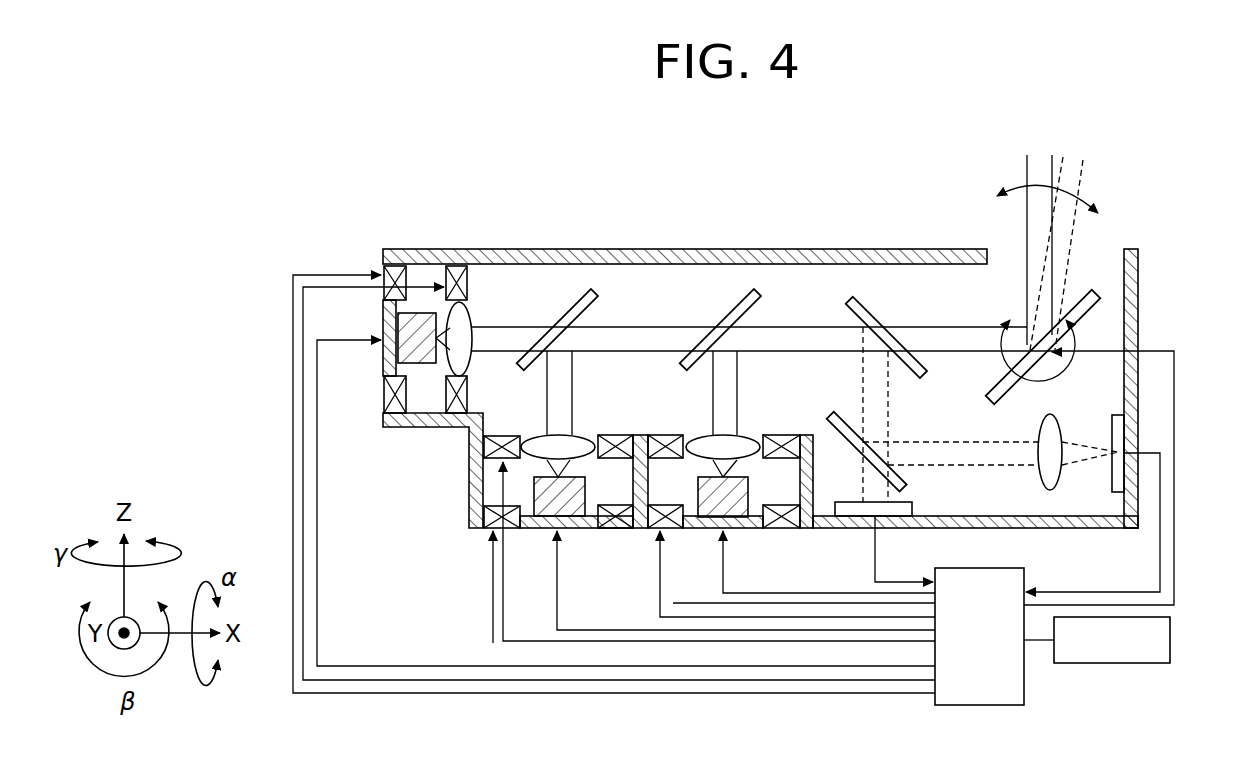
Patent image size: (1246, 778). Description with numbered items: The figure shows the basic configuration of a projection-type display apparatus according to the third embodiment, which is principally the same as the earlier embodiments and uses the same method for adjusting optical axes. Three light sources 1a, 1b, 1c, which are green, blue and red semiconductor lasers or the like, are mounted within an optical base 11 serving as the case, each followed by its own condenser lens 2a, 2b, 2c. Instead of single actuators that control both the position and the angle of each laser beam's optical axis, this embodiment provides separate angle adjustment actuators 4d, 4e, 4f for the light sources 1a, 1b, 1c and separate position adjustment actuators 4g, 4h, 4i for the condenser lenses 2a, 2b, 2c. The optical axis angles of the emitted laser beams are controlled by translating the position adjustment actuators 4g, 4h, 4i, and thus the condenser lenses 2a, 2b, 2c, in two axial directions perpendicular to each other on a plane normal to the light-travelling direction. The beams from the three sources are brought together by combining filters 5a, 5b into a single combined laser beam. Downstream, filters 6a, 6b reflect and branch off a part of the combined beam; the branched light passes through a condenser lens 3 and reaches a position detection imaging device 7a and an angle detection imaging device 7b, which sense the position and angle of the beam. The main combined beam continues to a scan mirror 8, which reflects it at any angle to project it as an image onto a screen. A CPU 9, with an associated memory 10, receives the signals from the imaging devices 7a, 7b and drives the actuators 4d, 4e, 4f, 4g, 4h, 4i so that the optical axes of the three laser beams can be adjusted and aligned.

The light source 1a is at (382, 327).
The light source 1b is at (572, 532).
The light source 1c is at (743, 532).
The condenser lens 2a is at (468, 322).
The condenser lens 2b is at (583, 435).
The condenser lens 2c is at (748, 435).
The condenser lens 3 is at (1040, 486).
The angle adjustment actuator 4d is at (412, 276).
The angle adjustment actuator 4e is at (490, 532).
The angle adjustment actuator 4f is at (650, 532).
The position adjustment actuator 4g is at (469, 280).
The position adjustment actuator 4h is at (500, 435).
The position adjustment actuator 4i is at (668, 435).
The combining filter 5a is at (597, 298).
The combining filter 5b is at (758, 300).
The filter 6a is at (857, 303).
The filter 6b is at (845, 420).
The position detection imaging device 7a is at (896, 510).
The angle detection imaging device 7b is at (1124, 405).
The scan mirror 8 is at (996, 382).
The CPU 9 is at (978, 707).
The memory 10 is at (1113, 665).
The optical base 11 is at (680, 246).